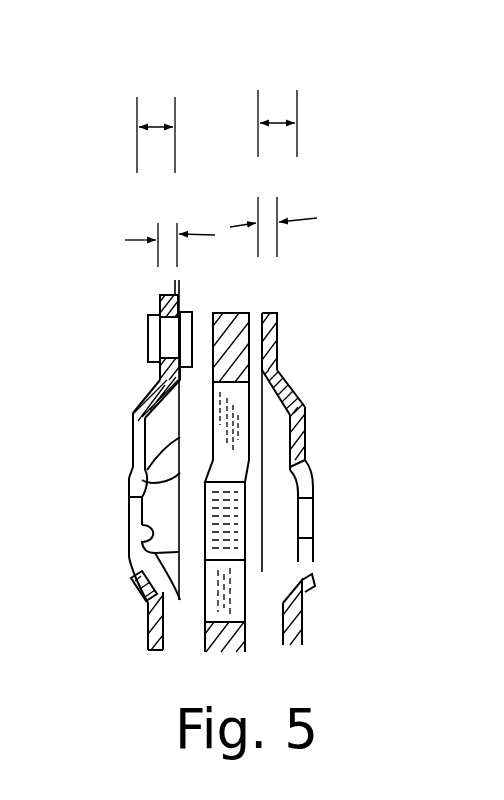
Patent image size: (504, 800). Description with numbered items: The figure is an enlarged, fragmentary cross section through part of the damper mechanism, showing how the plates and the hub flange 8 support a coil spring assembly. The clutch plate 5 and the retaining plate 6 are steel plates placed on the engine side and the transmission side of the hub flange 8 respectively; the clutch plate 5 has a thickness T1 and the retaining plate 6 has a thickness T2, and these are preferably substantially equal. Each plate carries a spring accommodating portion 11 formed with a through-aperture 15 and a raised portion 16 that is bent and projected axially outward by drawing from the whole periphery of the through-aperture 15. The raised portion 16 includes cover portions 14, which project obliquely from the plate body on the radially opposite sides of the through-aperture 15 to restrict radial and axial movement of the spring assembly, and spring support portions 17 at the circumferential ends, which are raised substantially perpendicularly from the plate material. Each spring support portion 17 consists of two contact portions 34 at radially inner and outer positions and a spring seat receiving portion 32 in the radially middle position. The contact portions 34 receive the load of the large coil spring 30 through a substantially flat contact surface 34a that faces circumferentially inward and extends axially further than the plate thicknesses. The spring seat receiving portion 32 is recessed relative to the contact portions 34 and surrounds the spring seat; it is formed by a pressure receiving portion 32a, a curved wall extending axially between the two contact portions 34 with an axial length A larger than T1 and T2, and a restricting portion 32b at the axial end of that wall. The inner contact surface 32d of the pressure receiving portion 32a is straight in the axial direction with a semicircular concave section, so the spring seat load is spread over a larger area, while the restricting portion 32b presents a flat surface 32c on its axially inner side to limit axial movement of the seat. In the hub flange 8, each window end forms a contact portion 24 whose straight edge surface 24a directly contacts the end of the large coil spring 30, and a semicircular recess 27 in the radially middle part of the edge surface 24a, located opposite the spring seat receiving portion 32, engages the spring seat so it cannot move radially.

The axial length A is at (282, 117).
The thickness of clutch plate T1 is at (164, 235).
The thickness of retaining plate T2 is at (267, 213).
The clutch plate 5 is at (150, 400).
The retaining plate 6 is at (272, 355).
The hub flange 8 is at (237, 313).
The spring accommodating portion 11 is at (395, 497).
The cover portion 14 is at (138, 428).
The through-aperture 15 is at (127, 437).
The raised portion 16 is at (313, 584).
The spring support portion 17 is at (323, 467).
The contact portion 24 is at (245, 589).
The edge surface 24a is at (233, 358).
The recess 27 is at (212, 540).
The large coil spring 30 is at (290, 440).
The spring seat receiving portion 32 is at (124, 486).
The pressure receiving portion 32a is at (135, 466).
The restricting portion 32b is at (122, 497).
The flat surface 32c is at (133, 548).
The inner contact surface 32d is at (183, 568).
The contact portion 34 is at (262, 600).
The contact surface 34a is at (140, 405).